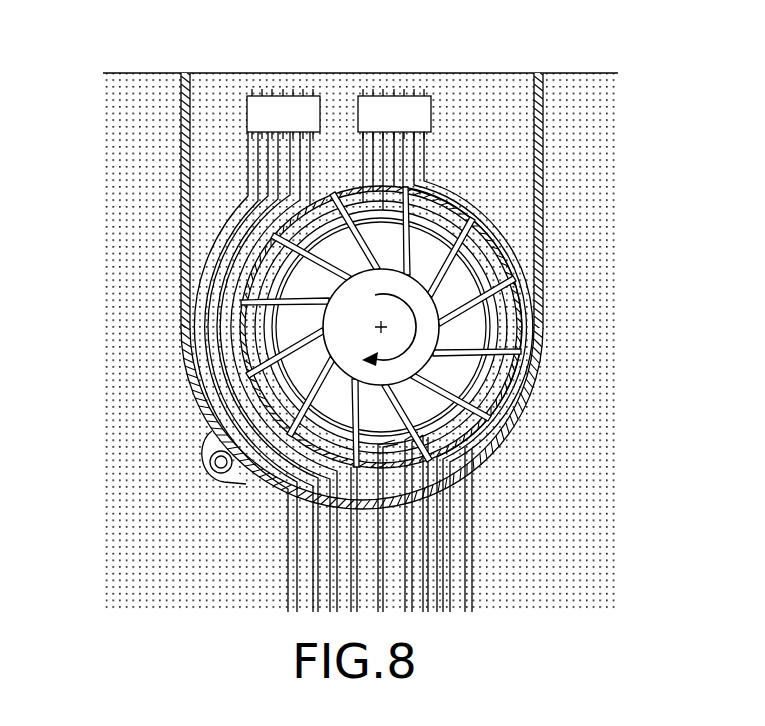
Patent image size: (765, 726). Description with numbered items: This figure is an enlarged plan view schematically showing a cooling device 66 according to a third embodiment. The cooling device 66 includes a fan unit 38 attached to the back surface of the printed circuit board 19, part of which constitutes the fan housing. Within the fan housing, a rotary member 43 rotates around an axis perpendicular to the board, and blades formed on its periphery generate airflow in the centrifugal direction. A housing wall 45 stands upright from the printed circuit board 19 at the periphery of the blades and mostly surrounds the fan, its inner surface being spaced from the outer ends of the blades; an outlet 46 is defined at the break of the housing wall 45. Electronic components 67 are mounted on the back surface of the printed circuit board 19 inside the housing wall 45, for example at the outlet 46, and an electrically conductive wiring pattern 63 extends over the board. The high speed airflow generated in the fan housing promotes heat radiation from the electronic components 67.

The printed circuit board 19 is at (157, 73).
The fan unit 38 is at (548, 205).
The rotary member 43 is at (531, 388).
The housing wall 45 is at (191, 394).
The outlet 46 is at (527, 81).
The electrically conductive wiring pattern 63 is at (291, 538).
The cooling device 66 is at (485, 549).
The electronic components 67 is at (292, 100).